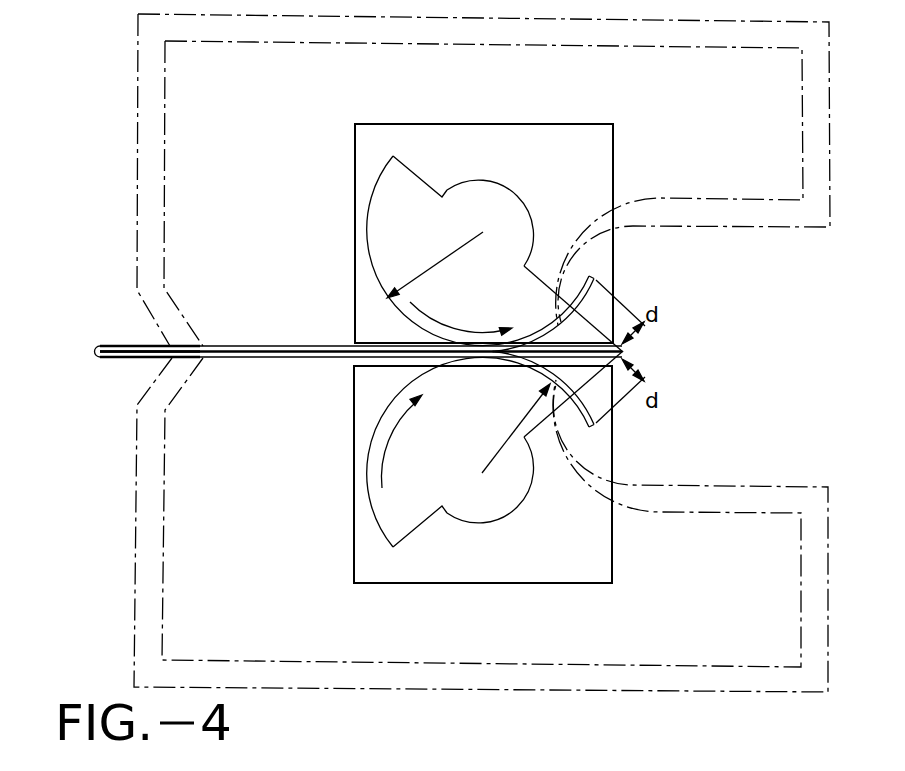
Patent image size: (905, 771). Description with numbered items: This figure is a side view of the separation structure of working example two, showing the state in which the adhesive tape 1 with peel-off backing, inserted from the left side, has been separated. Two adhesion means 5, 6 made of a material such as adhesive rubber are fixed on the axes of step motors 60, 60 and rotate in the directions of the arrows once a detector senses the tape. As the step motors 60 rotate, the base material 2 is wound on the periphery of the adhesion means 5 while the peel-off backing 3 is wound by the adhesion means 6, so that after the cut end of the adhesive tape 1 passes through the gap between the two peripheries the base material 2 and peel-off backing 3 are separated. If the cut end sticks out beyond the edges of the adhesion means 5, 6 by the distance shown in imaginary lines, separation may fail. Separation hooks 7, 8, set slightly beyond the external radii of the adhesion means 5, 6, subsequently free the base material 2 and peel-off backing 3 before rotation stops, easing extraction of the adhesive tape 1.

The adhesive tape with peel-off backing 1 is at (110, 327).
The base material 2 is at (241, 345).
The peel-off backing 3 is at (292, 359).
The adhesion means 5 is at (378, 235).
The adhesion means 6 is at (487, 518).
The separation hook 7 is at (643, 488).
The separation hook 8 is at (645, 221).
The step motor 60 is at (602, 553).